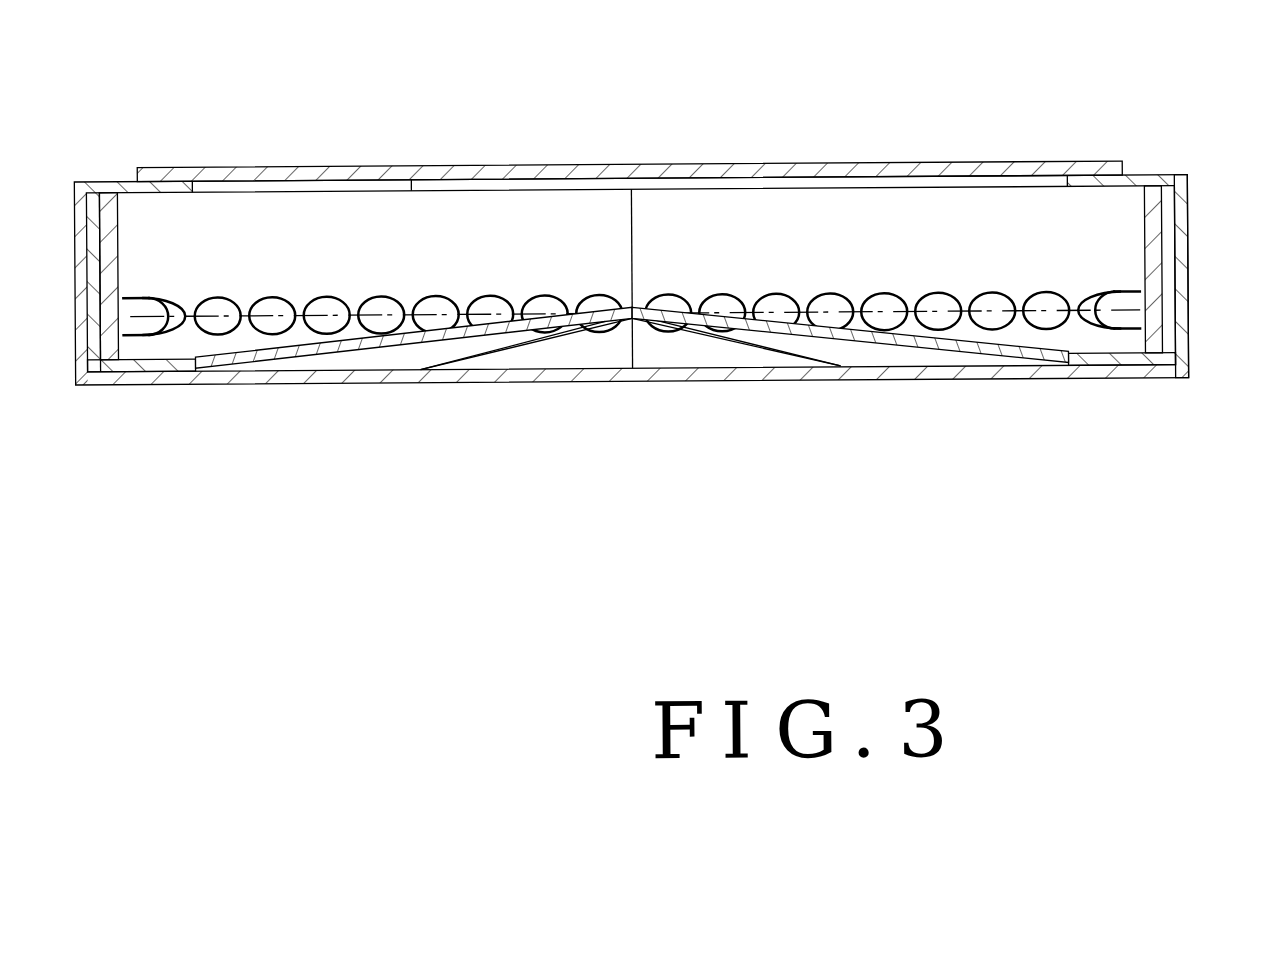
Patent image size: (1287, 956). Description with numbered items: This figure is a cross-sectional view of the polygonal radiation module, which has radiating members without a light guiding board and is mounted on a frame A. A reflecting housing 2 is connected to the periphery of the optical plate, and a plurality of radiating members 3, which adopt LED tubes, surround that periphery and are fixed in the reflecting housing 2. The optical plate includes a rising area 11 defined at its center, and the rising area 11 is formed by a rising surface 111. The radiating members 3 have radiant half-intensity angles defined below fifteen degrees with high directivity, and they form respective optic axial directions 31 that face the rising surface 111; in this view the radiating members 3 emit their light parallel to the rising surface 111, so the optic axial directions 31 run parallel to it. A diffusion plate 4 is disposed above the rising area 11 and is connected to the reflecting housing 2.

The reflecting housing 2 is at (1128, 310).
The radiating members 3 is at (1187, 180).
The diffusion plate 4 is at (1028, 174).
The rising area 11 is at (818, 338).
The rising surface 111 is at (905, 341).
The optic axial directions 31 is at (1043, 318).
The frame A is at (1182, 310).